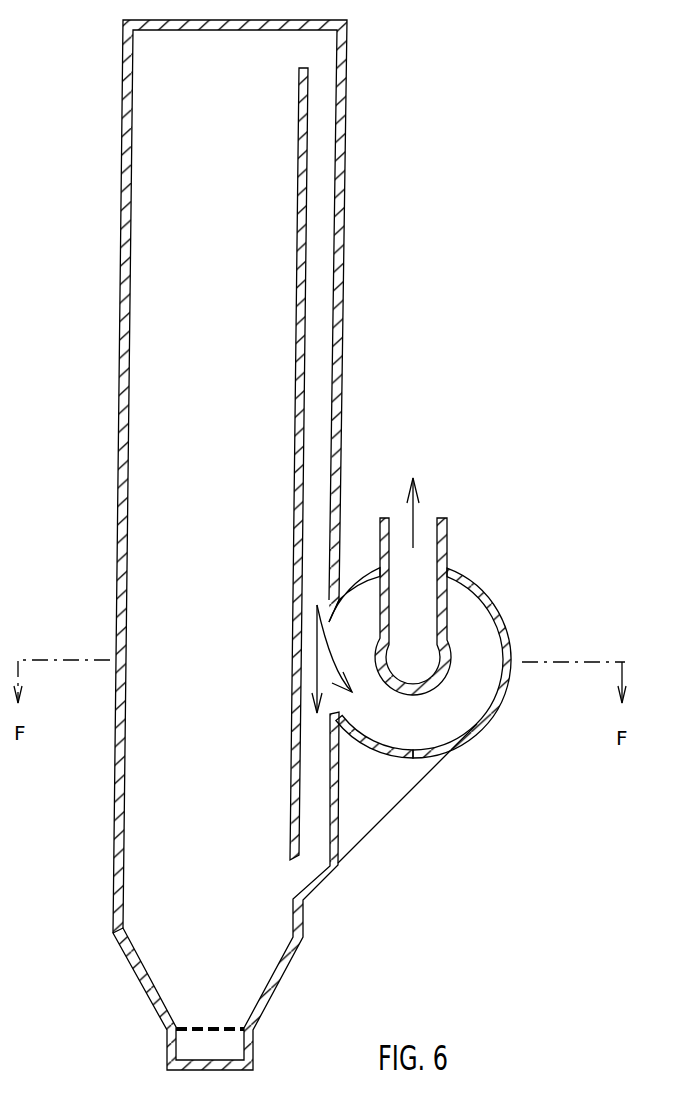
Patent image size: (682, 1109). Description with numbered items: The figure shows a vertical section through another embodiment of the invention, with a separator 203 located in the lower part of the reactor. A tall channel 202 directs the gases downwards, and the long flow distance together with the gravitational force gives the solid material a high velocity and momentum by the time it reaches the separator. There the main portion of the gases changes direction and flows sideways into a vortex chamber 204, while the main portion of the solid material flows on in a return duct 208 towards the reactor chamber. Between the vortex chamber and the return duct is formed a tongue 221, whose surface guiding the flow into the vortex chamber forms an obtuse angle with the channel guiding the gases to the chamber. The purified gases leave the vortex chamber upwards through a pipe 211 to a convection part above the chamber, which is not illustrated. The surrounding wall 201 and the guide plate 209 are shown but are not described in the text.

The separator column 201 is at (147, 558).
The channel 202 is at (317, 449).
The separator 203 is at (505, 573).
The vortex chamber 204 is at (485, 637).
The return duct 208 is at (313, 815).
The guide plate 209 is at (410, 792).
The pipe 211 is at (427, 525).
The tongue 221 is at (340, 718).